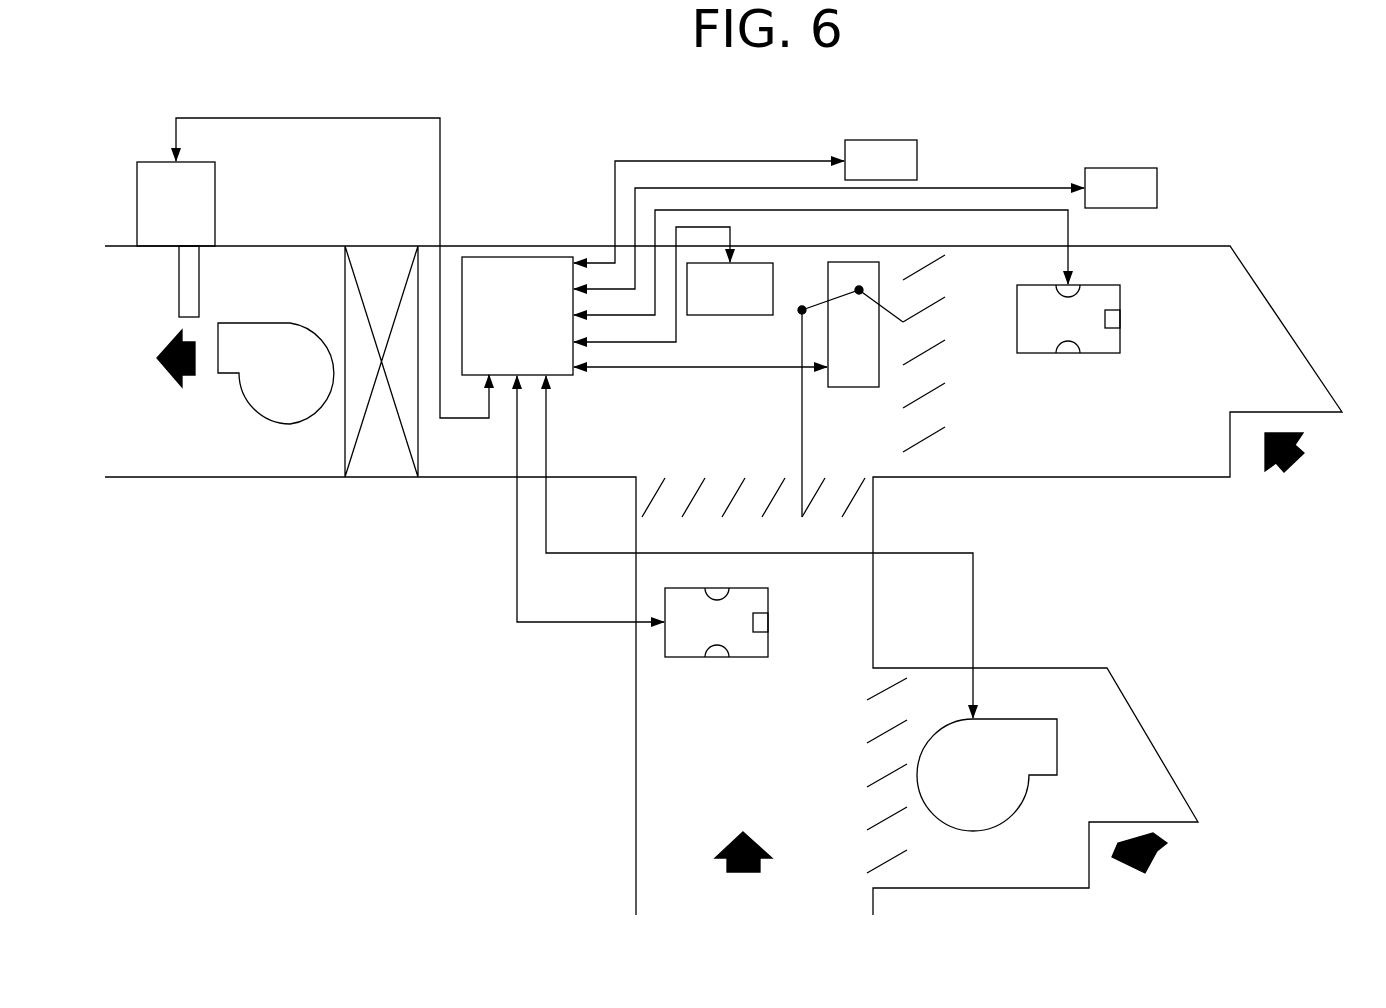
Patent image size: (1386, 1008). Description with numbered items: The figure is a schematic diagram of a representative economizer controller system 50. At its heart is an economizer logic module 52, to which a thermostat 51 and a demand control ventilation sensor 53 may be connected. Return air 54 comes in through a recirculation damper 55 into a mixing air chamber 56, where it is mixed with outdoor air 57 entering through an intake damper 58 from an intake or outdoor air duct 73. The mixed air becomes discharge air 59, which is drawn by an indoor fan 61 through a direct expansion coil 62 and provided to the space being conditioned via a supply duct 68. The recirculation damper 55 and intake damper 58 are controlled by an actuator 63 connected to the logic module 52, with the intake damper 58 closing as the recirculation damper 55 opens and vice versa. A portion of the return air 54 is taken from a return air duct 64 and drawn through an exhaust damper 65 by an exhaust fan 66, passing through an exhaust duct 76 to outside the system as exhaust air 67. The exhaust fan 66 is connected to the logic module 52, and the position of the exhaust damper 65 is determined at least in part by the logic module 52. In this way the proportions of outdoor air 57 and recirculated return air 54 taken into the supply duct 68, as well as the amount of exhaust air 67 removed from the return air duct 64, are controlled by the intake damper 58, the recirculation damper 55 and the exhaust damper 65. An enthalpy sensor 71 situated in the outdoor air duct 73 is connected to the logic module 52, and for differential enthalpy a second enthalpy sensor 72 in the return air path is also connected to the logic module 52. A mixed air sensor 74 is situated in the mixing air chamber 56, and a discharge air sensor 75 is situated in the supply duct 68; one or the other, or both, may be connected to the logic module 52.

The economizer controller system 50 is at (677, 132).
The thermostat 51 is at (867, 174).
The economizer logic module 52 is at (558, 365).
The demand control ventilation sensor 53 is at (1107, 202).
The return air 54 is at (728, 842).
The recirculation damper 55 is at (735, 500).
The mixing air chamber 56 is at (603, 464).
The outdoor air 57 is at (1300, 456).
The intake damper 58 is at (928, 350).
The discharge air 59 is at (166, 346).
The indoor fan 61 is at (264, 328).
The direct expansion coil 62 is at (418, 447).
The actuator 63 is at (870, 276).
The return air duct 64 is at (673, 764).
The exhaust damper 65 is at (890, 775).
The exhaust fan 66 is at (1043, 738).
The exhaust air 67 is at (1170, 858).
The supply duct 68 is at (213, 467).
The enthalpy sensor 71 is at (1054, 333).
The second enthalpy sensor 72 is at (703, 636).
The outdoor air duct 73 is at (1136, 441).
The mixed air sensor 74 is at (716, 303).
The discharge air sensor 75 is at (162, 216).
The exhaust duct 76 is at (1039, 876).